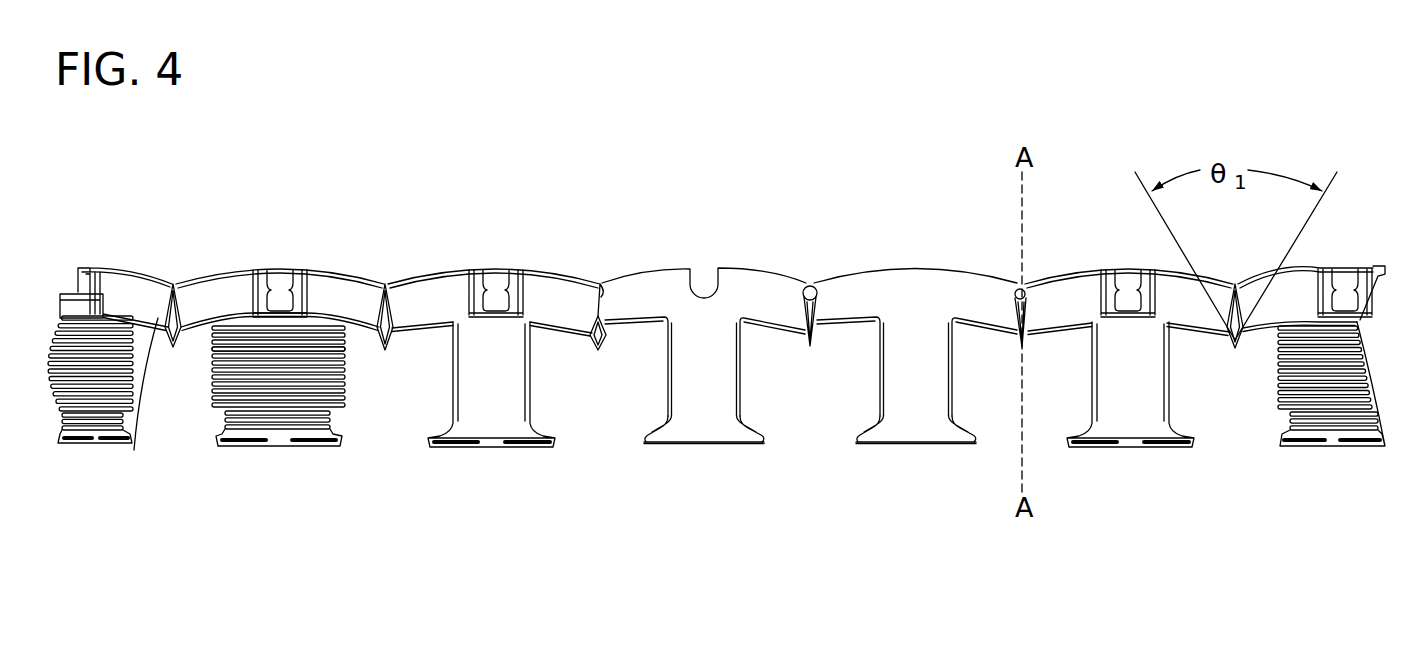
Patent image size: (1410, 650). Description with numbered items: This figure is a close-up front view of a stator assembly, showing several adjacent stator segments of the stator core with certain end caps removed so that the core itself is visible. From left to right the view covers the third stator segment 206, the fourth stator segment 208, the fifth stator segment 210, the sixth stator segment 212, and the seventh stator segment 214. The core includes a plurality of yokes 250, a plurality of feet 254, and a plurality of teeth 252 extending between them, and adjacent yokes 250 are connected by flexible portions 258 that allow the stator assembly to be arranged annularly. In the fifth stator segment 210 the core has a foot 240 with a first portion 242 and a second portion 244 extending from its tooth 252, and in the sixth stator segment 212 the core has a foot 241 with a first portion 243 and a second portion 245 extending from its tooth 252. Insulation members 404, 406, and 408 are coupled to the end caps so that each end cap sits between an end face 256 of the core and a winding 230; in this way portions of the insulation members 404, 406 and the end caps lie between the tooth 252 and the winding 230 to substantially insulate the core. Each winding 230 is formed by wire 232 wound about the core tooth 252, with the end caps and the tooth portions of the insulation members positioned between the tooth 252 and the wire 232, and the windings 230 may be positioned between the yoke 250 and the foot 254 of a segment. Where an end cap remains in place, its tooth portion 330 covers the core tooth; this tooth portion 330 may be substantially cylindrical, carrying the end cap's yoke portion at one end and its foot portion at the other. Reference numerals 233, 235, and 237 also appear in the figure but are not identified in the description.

The third stator segment 206 is at (318, 260).
The fourth stator segment 208 is at (503, 260).
The fifth stator segment 210 is at (723, 260).
The sixth stator segment 212 is at (918, 260).
The seventh stator segment 214 is at (1075, 262).
The winding 230 is at (248, 385).
The wire 232 is at (233, 348).
The band segment 233 is at (217, 254).
The narrow rib section 235 is at (216, 434).
The pedestal base 237 is at (270, 452).
The foot 240 is at (705, 444).
The foot 241 is at (917, 444).
The first portion 242 is at (658, 446).
The first portion 243 is at (869, 444).
The second portion 244 is at (753, 444).
The second portion 245 is at (975, 444).
The yoke 250 is at (809, 223).
The tooth 252 is at (801, 440).
The foot 254 is at (732, 437).
The end face 256 is at (668, 400).
The flexible portion 258 is at (813, 277).
The tooth portion 330 is at (497, 340).
The insulation member 404 is at (134, 450).
The insulation member 406 is at (386, 351).
The insulation member 408 is at (601, 350).